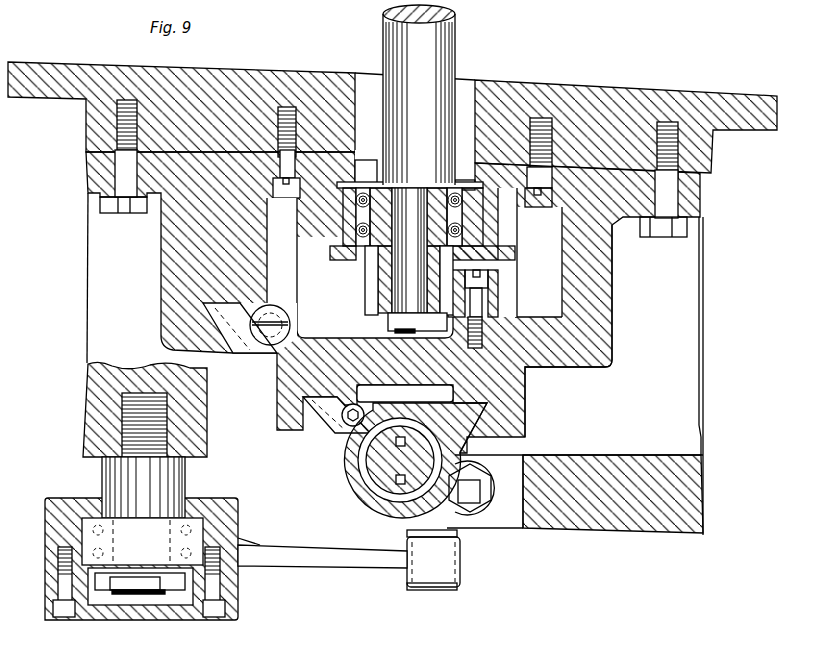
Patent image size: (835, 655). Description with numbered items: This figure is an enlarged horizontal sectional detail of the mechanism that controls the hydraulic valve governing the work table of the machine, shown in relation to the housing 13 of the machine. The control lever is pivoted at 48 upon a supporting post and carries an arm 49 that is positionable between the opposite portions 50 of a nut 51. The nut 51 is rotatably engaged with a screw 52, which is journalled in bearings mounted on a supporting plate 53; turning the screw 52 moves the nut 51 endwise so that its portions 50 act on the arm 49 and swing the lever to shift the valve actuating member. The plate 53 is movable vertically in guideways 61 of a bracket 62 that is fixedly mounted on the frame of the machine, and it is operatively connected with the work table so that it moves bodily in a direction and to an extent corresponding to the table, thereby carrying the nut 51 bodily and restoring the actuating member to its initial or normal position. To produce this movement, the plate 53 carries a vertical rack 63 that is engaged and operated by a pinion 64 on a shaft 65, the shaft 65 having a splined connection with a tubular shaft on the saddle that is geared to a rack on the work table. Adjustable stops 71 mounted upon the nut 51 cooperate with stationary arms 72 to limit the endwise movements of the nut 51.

The housing 13 is at (293, 52).
The pivot 48 is at (232, 484).
The arm 49 is at (322, 557).
The opposite portions of nut 50 is at (442, 587).
The nut 51 is at (400, 518).
The screw 52 is at (365, 456).
The supporting plate 53 is at (285, 420).
The guideways 61 is at (556, 348).
The bracket 62 is at (615, 318).
The vertical rack 63 is at (498, 296).
The pinion 64 is at (372, 272).
The shaft 65 is at (458, 48).
The adjustable stops 71 is at (478, 510).
The stationary arms 72 is at (510, 462).